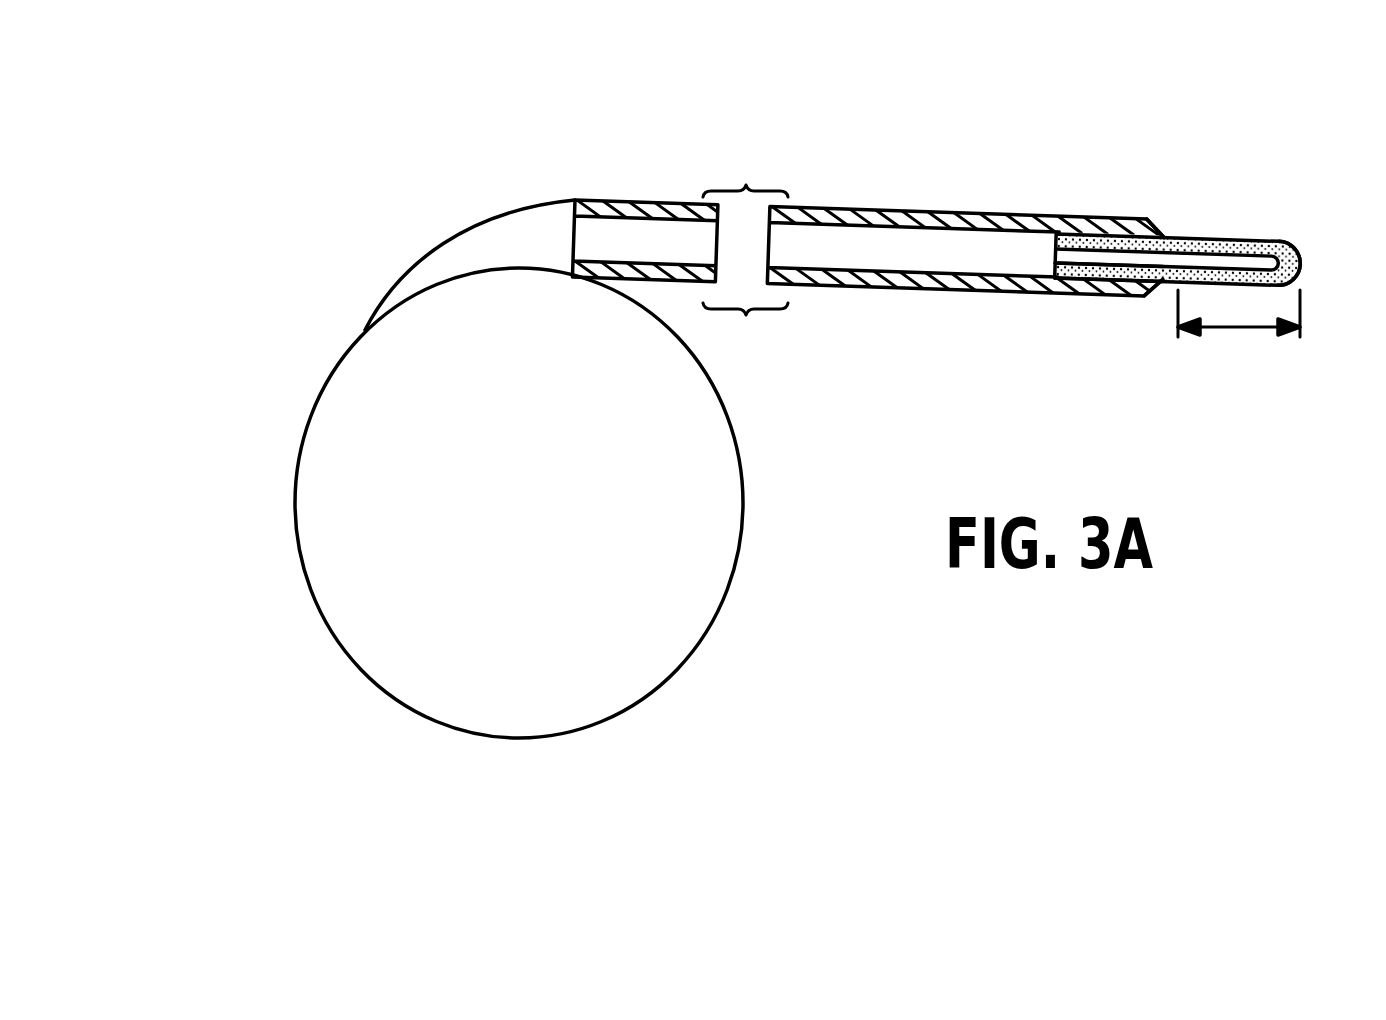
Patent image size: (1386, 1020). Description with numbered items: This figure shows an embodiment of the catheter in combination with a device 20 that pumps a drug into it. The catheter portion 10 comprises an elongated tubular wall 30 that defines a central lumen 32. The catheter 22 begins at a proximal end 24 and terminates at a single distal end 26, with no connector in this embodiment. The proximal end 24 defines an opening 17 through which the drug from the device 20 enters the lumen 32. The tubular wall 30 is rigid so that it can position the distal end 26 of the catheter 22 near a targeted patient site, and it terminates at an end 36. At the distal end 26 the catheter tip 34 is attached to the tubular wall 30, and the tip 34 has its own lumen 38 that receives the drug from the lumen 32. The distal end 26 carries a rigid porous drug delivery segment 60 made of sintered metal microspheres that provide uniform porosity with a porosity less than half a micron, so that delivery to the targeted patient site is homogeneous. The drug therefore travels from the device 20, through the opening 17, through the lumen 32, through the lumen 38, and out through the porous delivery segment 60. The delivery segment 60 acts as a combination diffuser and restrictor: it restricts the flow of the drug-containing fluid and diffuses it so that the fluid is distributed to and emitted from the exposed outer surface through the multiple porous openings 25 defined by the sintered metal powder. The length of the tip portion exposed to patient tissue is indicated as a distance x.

The catheter portion 10 is at (855, 289).
The opening 17 is at (578, 240).
The device 20 is at (290, 572).
The catheter 22 is at (680, 283).
The proximal end 24 is at (605, 202).
The porous openings 25 is at (1302, 283).
The distal end 26 is at (1160, 265).
The tubular wall 30 is at (955, 287).
The lumen 32 is at (930, 236).
The catheter tip 34 is at (1305, 262).
The end 36 is at (1150, 230).
The lumen 38 is at (1093, 272).
The drug delivery segment 60 is at (1236, 240).